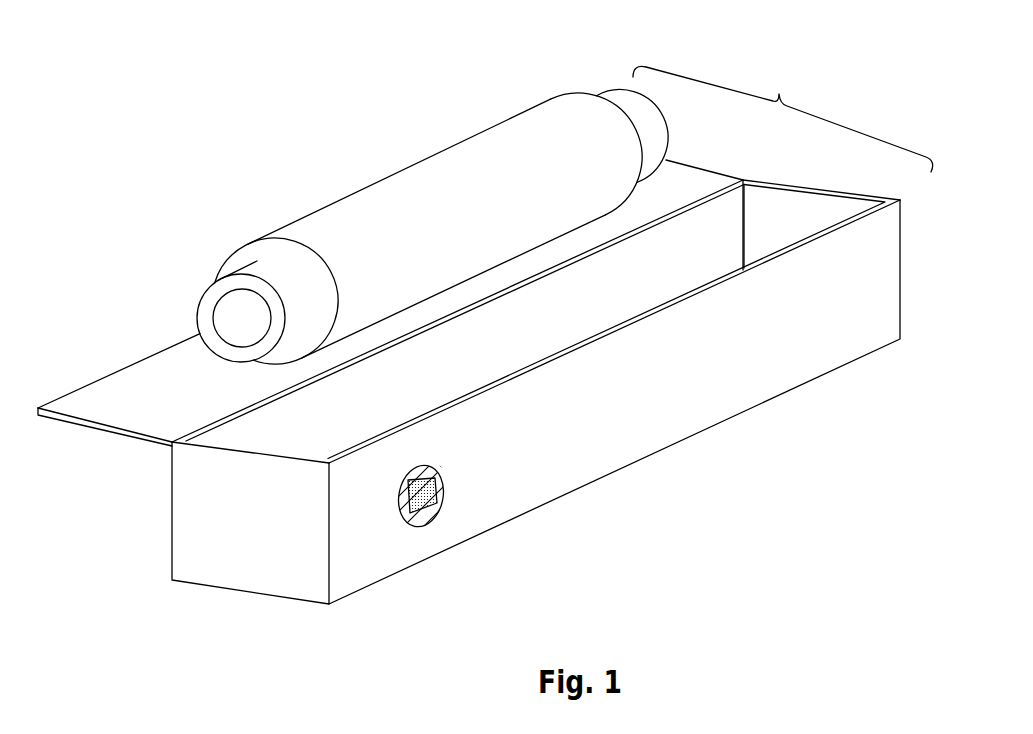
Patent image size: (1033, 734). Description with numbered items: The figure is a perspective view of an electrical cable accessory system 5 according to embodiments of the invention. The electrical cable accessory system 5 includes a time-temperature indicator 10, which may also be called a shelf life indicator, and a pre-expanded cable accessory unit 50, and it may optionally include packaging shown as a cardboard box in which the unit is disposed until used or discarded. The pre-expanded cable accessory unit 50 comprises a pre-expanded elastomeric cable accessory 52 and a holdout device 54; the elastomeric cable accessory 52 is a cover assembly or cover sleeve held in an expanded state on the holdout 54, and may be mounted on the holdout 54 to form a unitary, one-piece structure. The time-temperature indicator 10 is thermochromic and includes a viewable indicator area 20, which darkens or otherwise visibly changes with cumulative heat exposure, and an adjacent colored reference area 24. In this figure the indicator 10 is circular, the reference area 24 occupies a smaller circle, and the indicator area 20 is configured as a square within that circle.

The electrical cable accessory system 5 is at (816, 56).
The time-temperature indicator 10 is at (442, 458).
The indicator area 20 is at (430, 521).
The reference area 24 is at (448, 489).
The pre-expanded cable accessory unit 50 is at (270, 155).
The pre-expanded elastomeric cable accessory 52 is at (417, 177).
The holdout device 54 is at (268, 271).